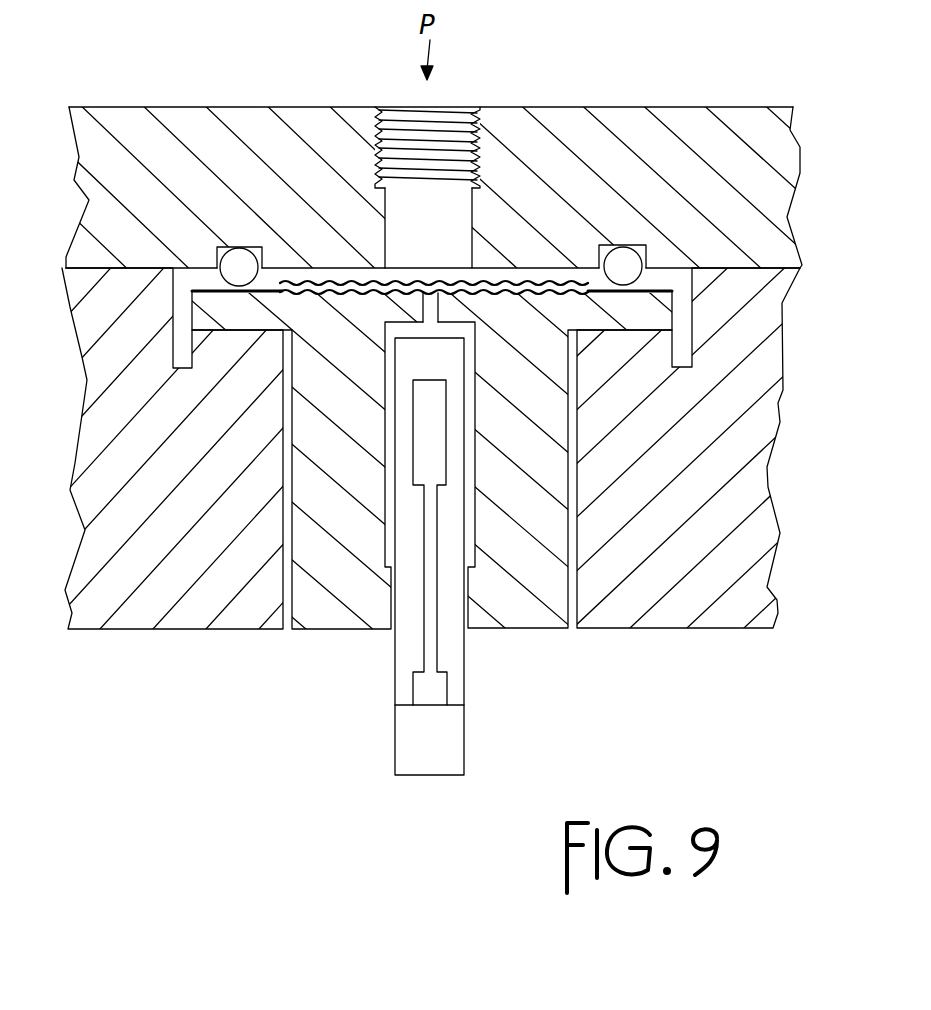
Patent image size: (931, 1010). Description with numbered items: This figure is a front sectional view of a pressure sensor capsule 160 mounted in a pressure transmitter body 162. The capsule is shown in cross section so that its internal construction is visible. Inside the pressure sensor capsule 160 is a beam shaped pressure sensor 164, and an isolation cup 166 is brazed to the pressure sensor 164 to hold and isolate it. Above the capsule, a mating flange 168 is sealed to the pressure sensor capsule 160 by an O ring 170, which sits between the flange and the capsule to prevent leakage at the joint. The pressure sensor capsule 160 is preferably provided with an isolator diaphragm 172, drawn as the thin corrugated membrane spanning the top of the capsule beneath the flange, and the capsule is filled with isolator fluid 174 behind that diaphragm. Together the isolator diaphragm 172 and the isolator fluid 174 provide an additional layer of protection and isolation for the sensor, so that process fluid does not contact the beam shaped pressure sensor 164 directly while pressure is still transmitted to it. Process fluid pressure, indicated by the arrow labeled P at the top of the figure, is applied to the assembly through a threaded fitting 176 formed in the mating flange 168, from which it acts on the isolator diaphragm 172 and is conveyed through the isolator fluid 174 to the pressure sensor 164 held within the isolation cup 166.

The pressure sensor capsule 160 is at (332, 630).
The pressure transmitter body 162 is at (140, 630).
The beam shaped pressure sensor 164 is at (466, 677).
The isolation cup 166 is at (537, 577).
The mating flange 168 is at (140, 107).
The O ring 170 is at (238, 265).
The isolator diaphragm 172 is at (520, 283).
The isolator fluid 174 is at (418, 333).
The threaded fitting 176 is at (481, 176).